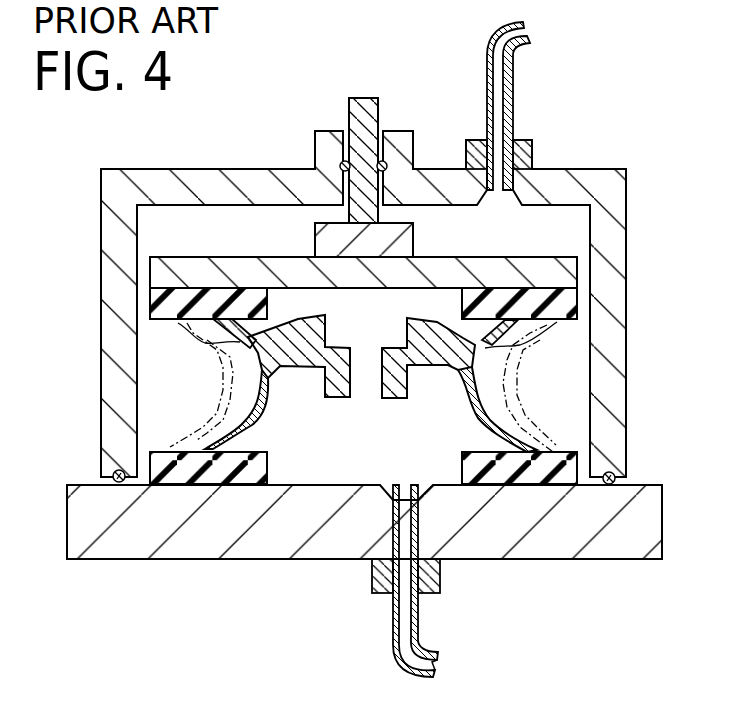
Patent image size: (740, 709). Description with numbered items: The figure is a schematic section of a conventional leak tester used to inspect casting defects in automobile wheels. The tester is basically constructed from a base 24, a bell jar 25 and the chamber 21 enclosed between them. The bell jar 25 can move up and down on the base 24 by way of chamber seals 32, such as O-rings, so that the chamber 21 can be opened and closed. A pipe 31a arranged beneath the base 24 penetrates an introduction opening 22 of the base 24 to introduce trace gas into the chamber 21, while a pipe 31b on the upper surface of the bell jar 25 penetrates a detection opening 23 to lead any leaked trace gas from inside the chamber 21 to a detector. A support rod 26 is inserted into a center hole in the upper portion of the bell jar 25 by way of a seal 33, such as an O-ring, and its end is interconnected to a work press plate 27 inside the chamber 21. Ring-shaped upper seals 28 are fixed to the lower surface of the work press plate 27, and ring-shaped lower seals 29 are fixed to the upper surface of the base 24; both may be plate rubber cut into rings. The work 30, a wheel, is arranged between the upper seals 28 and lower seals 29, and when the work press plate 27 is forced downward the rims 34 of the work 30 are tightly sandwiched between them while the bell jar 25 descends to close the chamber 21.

The chamber 21 is at (600, 94).
The introduction opening 22 is at (402, 500).
The detection opening 23 is at (498, 195).
The base 24 is at (585, 538).
The bell jar 25 is at (610, 200).
The support rod 26 is at (349, 100).
The work press plate 27 is at (160, 273).
The upper seals 28 is at (160, 303).
The lower seals 29 is at (208, 478).
The work 30 is at (477, 357).
The pipe 31a is at (422, 612).
The pipe 31b is at (513, 65).
The chamber seals 32 is at (617, 473).
The seal 33 is at (338, 164).
The rims 34 is at (245, 348).